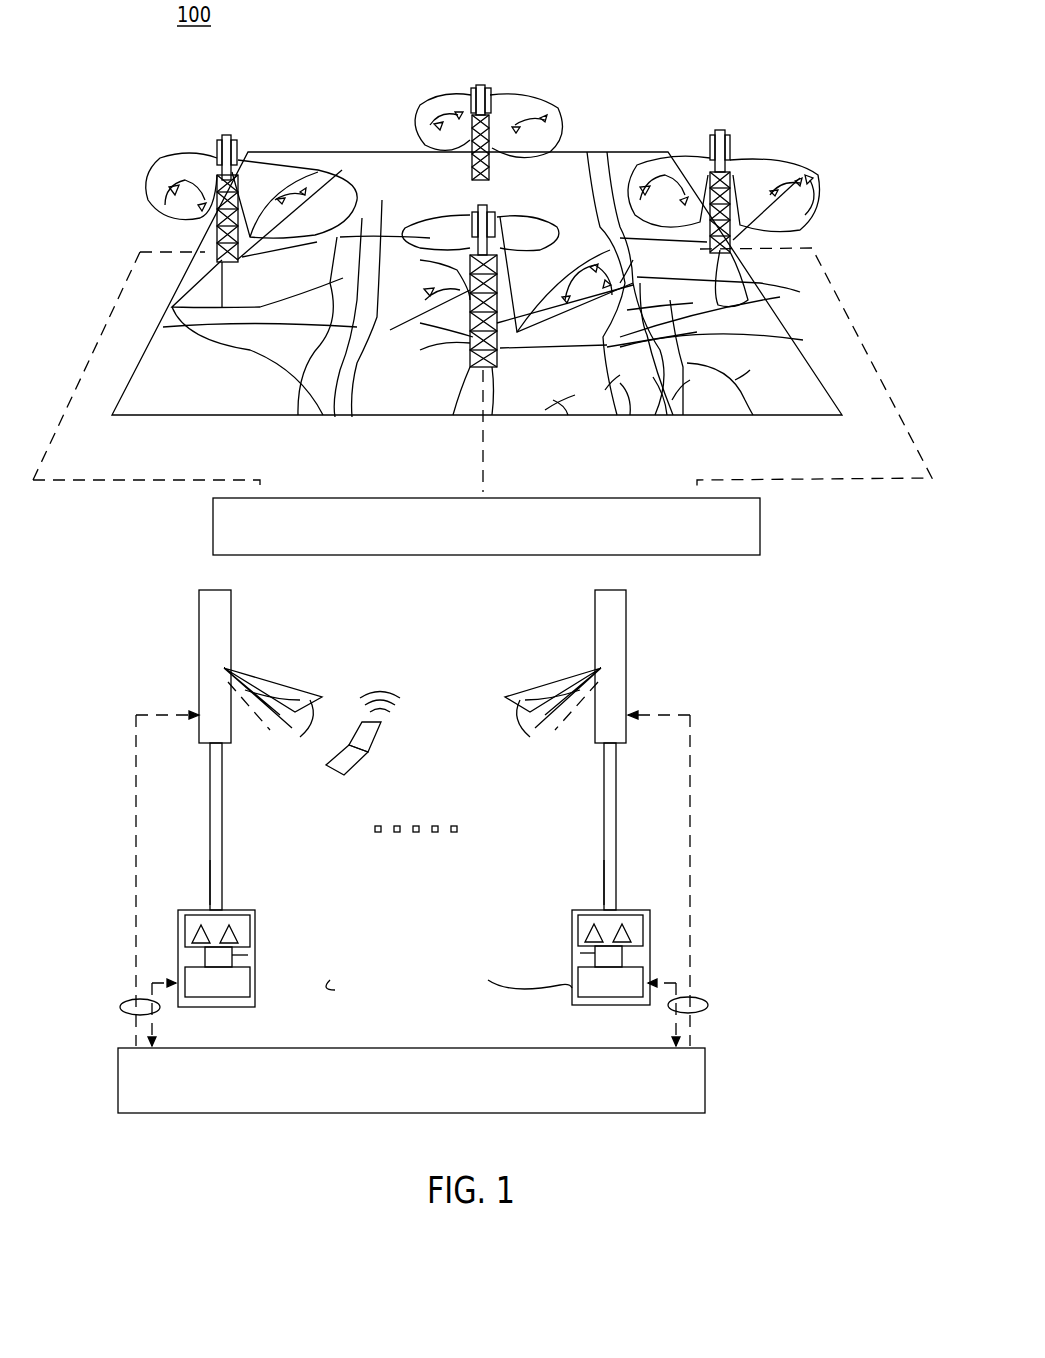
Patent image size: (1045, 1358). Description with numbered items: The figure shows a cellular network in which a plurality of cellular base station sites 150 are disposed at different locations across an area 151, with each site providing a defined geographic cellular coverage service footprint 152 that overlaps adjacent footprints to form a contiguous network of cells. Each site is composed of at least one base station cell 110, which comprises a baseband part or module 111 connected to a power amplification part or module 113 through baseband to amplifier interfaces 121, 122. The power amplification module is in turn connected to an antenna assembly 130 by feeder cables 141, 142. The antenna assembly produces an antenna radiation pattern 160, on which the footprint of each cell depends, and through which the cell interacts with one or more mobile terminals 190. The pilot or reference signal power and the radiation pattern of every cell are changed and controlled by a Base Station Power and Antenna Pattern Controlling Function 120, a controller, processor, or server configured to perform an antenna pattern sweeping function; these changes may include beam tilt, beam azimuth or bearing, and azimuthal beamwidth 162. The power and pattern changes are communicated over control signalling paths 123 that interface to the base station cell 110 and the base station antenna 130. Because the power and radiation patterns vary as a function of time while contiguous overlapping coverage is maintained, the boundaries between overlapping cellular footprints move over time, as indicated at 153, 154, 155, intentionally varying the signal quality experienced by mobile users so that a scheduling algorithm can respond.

The base station cell 110 is at (195, 905).
The baseband part or module 111 is at (195, 980).
The power amplification part or module 113 is at (195, 922).
The Base Station Power and Antenna Pattern Controlling Function 120 is at (760, 528).
The baseband to amplifier interface 121 is at (200, 955).
The baseband to amplifier interface 122 is at (248, 955).
The control signalling path 123 is at (100, 483).
The antenna assembly 130 is at (215, 612).
The feeder cable 141 is at (205, 903).
The feeder cable 142 is at (215, 835).
The cellular base station site 150 is at (237, 133).
The area 151 is at (216, 389).
The cellular coverage service footprint 152 is at (553, 400).
The boundary between overlapping cellular footprints 153 is at (612, 392).
The boundary between overlapping cellular footprints 154 is at (680, 395).
The boundary between overlapping cellular footprints 155 is at (740, 382).
The antenna radiation pattern 160 is at (730, 250).
The azimuthal beamwidth 162 is at (820, 218).
The mobile terminal 190 is at (355, 762).